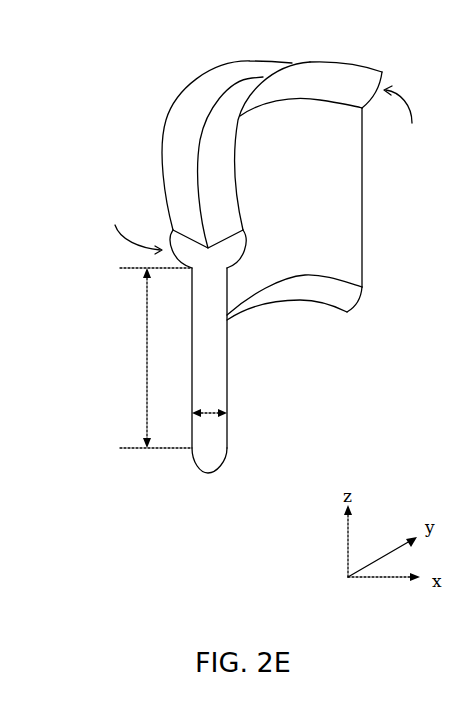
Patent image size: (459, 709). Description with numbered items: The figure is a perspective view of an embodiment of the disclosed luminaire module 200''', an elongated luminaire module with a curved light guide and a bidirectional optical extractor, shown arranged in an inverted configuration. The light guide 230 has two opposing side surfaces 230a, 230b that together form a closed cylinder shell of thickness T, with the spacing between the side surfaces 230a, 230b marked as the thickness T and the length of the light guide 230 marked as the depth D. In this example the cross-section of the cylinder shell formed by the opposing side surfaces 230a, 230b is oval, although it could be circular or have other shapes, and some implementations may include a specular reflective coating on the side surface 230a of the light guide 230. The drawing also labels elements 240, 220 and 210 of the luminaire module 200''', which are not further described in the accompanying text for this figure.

The luminaire module 200''' is at (239, 263).
The curved strap / spring arm 240 is at (348, 72).
The light guide 230 is at (363, 232).
The contact pin / tip portion 220 is at (223, 457).
The distal end 210 is at (208, 475).
The side surface 230a is at (243, 382).
The side surface 230b is at (132, 380).